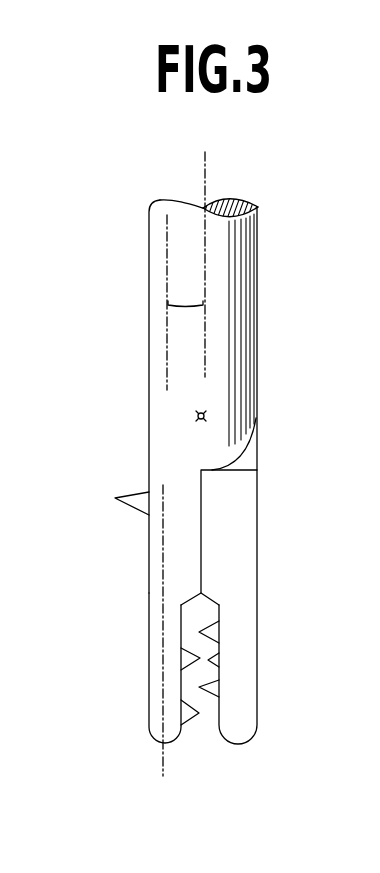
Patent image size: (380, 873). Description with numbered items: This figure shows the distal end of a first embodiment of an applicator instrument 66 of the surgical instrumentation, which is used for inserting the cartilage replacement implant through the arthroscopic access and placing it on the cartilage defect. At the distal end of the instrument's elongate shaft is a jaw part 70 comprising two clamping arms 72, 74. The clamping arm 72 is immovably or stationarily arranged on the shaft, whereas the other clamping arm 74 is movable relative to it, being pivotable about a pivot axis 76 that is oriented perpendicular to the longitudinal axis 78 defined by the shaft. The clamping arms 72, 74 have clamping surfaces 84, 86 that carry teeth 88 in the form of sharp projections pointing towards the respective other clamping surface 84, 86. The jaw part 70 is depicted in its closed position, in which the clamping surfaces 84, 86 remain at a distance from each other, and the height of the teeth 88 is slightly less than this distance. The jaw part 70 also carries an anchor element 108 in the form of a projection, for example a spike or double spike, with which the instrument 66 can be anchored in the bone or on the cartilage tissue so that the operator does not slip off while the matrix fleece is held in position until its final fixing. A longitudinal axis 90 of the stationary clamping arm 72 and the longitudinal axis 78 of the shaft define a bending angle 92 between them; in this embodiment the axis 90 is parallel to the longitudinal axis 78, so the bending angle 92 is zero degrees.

The applicator instrument 66 is at (274, 257).
The jaw part 70 is at (116, 619).
The clamping arm 72 is at (154, 564).
The clamping arm 74 is at (230, 580).
The pivot axis 76 is at (208, 413).
The longitudinal axis 78 is at (205, 160).
The clamping surface 84 is at (182, 692).
The clamping surface 86 is at (214, 664).
The teeth 88 is at (217, 633).
The longitudinal axis 90 is at (166, 767).
The bending angle 92 is at (185, 304).
The anchor element 108 is at (134, 494).